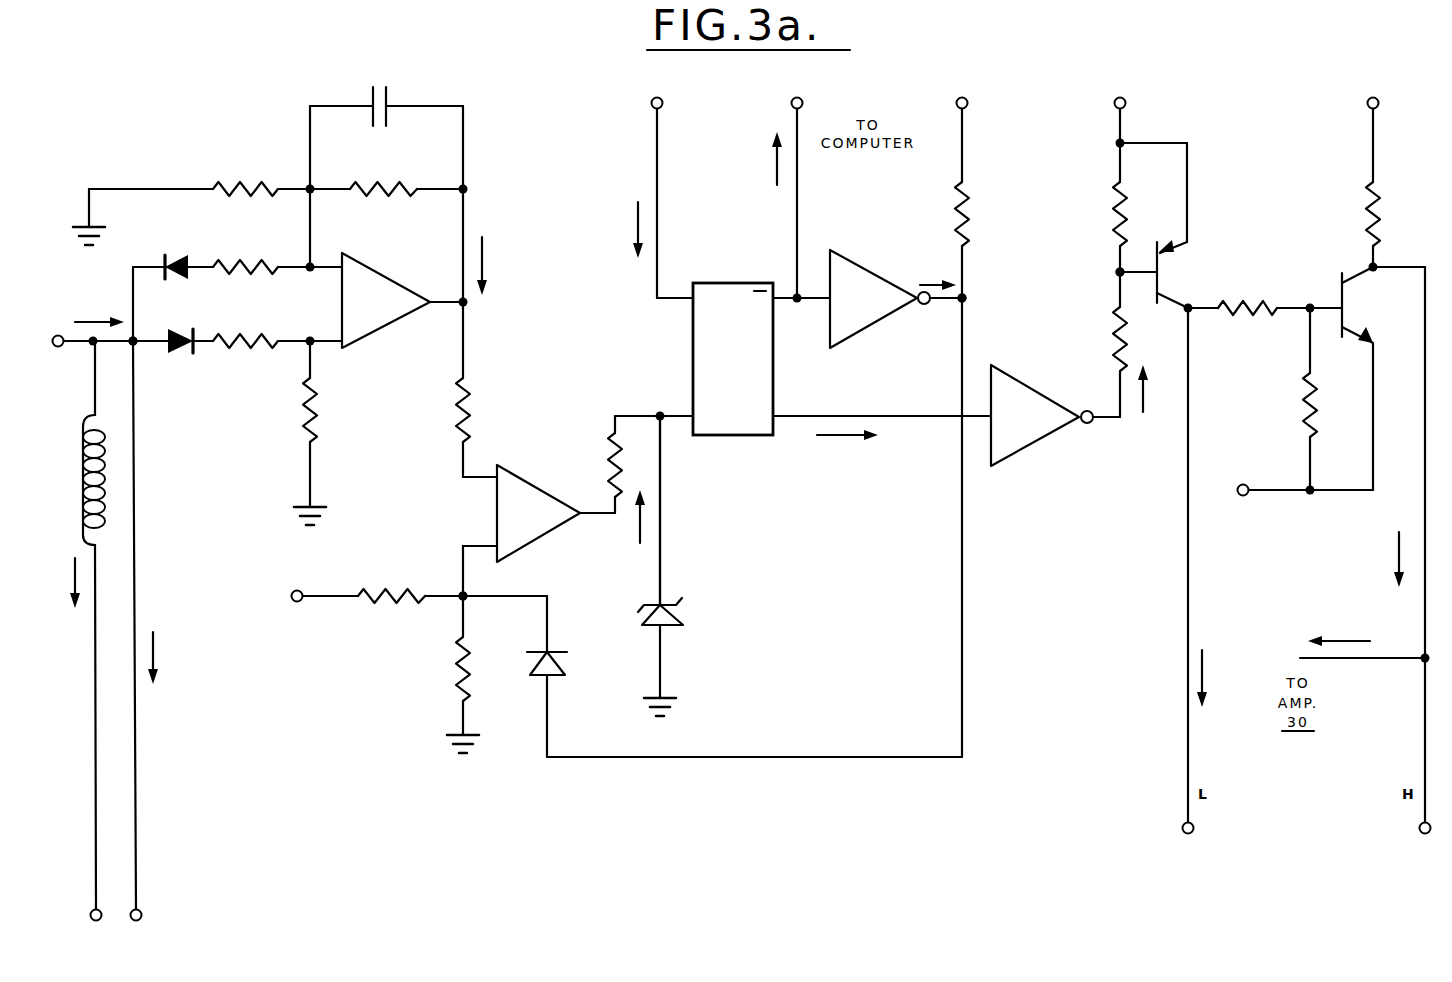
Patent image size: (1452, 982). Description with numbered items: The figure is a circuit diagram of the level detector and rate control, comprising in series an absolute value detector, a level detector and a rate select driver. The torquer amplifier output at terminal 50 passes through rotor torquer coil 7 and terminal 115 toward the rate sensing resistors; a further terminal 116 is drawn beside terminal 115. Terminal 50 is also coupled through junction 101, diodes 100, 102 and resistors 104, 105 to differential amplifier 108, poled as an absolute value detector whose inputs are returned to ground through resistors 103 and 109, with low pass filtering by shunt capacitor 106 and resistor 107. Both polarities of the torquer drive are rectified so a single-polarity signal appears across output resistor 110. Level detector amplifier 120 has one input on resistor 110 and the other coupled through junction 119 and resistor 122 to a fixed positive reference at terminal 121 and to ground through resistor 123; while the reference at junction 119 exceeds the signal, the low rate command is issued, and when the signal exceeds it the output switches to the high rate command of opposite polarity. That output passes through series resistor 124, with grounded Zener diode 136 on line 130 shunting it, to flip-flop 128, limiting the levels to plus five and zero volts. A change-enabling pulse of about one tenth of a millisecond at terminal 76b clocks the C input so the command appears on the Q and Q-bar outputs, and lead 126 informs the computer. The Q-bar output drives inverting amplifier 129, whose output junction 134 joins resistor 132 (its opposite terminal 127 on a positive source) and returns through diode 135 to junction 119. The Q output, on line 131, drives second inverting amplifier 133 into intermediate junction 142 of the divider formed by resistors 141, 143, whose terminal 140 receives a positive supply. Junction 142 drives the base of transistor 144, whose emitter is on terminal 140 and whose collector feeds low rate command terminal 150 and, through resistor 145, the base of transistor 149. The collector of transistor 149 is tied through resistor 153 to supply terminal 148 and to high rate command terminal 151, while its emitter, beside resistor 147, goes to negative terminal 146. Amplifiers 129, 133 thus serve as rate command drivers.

The torquer coil 7 is at (80, 420).
The terminal 50 is at (58, 335).
The terminal 76b is at (651, 102).
The diode 100 is at (180, 262).
The junction 101 is at (136, 346).
The diode 102 is at (194, 352).
The resistor 103 is at (247, 183).
The resistor 104 is at (248, 264).
The resistor 105 is at (248, 338).
The shunt capacitor 106 is at (378, 87).
The resistor 107 is at (375, 186).
The differential amplifier 108 is at (374, 272).
The resistor 109 is at (318, 414).
The output resistor 110 is at (467, 380).
The terminal 115 is at (90, 915).
The terminal 116 is at (142, 914).
The junction 119 is at (464, 594).
The level detector amplifier 120 is at (544, 486).
The terminal 121 is at (292, 593).
The resistor 122 is at (392, 592).
The resistor 123 is at (459, 674).
The series resistor 124 is at (604, 440).
The lead 126 is at (803, 103).
The terminal 127 is at (968, 103).
The flip-flop 128 is at (730, 283).
The inverting amplifier 129 is at (872, 276).
The conductor 130 is at (664, 512).
The conductor 131 is at (870, 414).
The resistor 132 is at (956, 208).
The inverting amplifier 133 is at (1028, 456).
The output junction 134 is at (966, 296).
The diode 135 is at (568, 668).
The Zener diode 136 is at (692, 621).
The terminal 140 is at (1126, 103).
The resistor 141 is at (1114, 206).
The intermediate junction 142 is at (1116, 270).
The resistor 143 is at (1114, 345).
The transistor 144 is at (1164, 272).
The resistor 145 is at (1242, 312).
The terminal 146 is at (1244, 496).
The resistor 147 is at (1304, 410).
The terminal 148 is at (1378, 103).
The transistor 149 is at (1340, 280).
The low rate command terminal 150 is at (1182, 828).
The high rate command terminal 151 is at (1419, 828).
The resistor 153 is at (1366, 214).